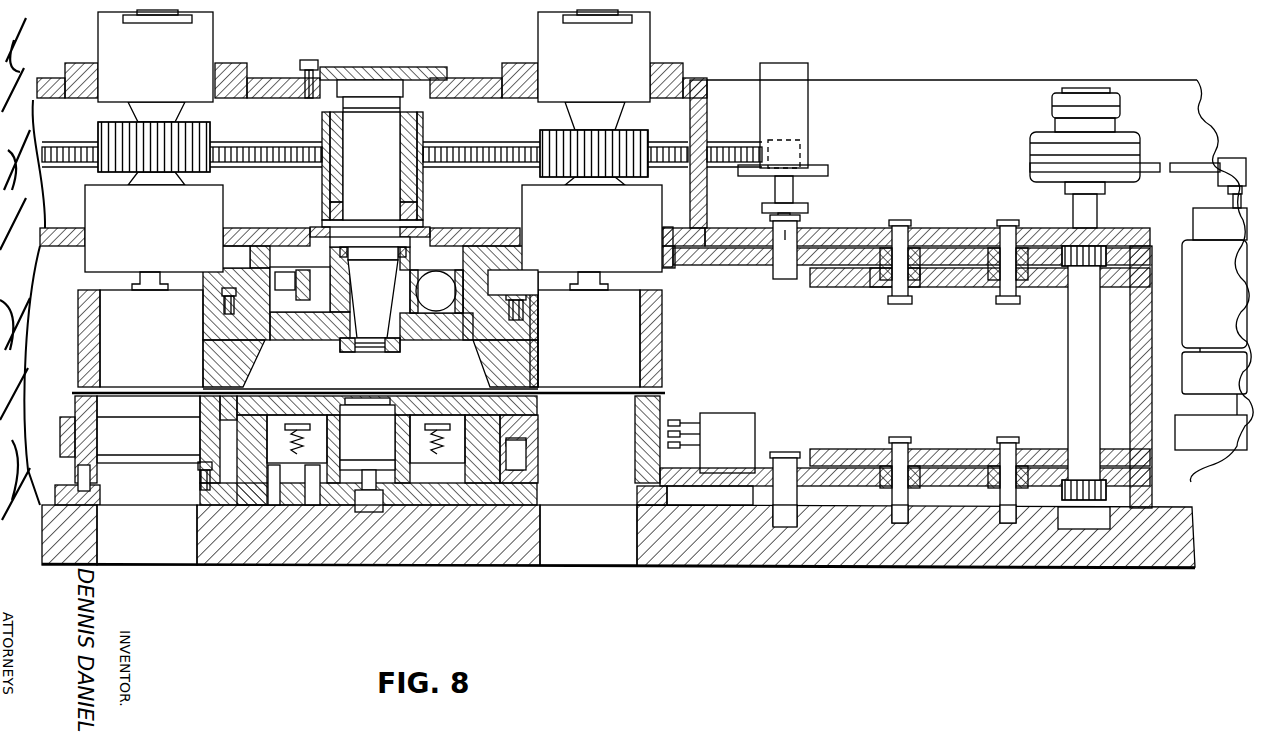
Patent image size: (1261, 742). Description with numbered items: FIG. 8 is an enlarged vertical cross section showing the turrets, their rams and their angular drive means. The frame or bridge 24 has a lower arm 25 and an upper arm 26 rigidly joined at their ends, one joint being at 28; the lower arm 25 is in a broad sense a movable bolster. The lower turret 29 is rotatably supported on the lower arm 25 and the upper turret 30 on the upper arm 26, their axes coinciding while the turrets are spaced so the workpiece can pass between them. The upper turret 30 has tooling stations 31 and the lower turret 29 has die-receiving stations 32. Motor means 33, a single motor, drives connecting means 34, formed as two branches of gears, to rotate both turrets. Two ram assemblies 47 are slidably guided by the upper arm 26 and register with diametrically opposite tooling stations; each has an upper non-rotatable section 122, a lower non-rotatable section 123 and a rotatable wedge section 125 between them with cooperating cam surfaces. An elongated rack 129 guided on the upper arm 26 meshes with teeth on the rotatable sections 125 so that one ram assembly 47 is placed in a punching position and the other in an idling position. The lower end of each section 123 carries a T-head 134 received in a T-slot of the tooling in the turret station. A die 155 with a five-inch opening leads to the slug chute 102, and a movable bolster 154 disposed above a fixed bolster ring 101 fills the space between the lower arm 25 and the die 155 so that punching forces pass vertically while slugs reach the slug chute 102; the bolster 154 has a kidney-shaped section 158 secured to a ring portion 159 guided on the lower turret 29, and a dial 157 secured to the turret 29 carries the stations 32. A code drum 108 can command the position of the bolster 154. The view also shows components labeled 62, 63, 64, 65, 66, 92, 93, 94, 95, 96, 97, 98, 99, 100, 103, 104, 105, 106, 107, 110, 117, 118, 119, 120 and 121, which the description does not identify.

The frame or bridge 24 is at (955, 80).
The lower arm 25 is at (830, 566).
The upper arm 26 is at (868, 228).
The joined end 28 is at (1152, 286).
The lower turret 29 is at (458, 392).
The upper turret 30 is at (424, 334).
The tooling station 31 is at (86, 368).
The die-receiving station 32 is at (78, 398).
The motor means 33 is at (1220, 331).
The connecting means 34 is at (1000, 426).
The ram assembly 47 is at (214, 38).
The upper bracket plate 62 is at (846, 296).
The lower bracket plate 63 is at (840, 440).
The clutch unit 64 is at (1110, 104).
The bearing pocket 65 is at (298, 326).
The guide surface 66 is at (318, 393).
The vertical shaft 92 is at (1068, 396).
The gear 93 is at (1068, 270).
The bolt 94 is at (972, 248).
The bushing 95 is at (934, 288).
The shaft 96 is at (762, 266).
The block 97 is at (806, 102).
The plate 98 is at (718, 266).
The connector block 99 is at (700, 464).
The end piece 100 is at (668, 268).
The fixed bolster ring 101 is at (650, 482).
The slug chute 102 is at (146, 544).
The bearing block 103 is at (476, 582).
The tapered spindle 104 is at (378, 311).
The screw 105 is at (300, 68).
The bearing housing 106 is at (332, 78).
The top plate 107 is at (464, 82).
The code drum 108 is at (424, 138).
The bolt 110 is at (229, 298).
The center block 117 is at (376, 454).
The screw 118 is at (283, 470).
The plate section 119 is at (458, 236).
The post 120 is at (266, 466).
The post 121 is at (316, 468).
The upper non-rotatable section 122 is at (163, 73).
The lower non-rotatable section 123 is at (176, 243).
The rotatable section 125 is at (213, 137).
The elongated rack 129 is at (310, 149).
The T-head 134 is at (166, 283).
The movable bolster 154 is at (74, 455).
The die 155 is at (148, 429).
The dial 157 is at (78, 422).
The kidney-shaped bolster section 158 is at (60, 490).
The arcuate ring portion 159 is at (206, 432).